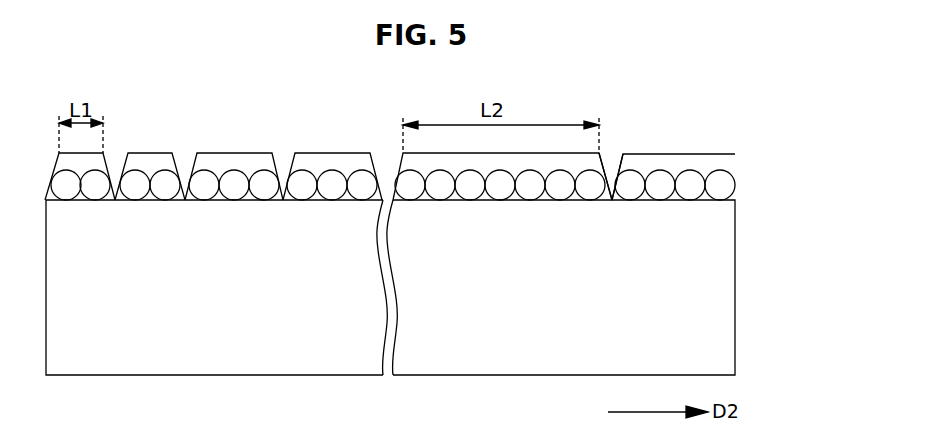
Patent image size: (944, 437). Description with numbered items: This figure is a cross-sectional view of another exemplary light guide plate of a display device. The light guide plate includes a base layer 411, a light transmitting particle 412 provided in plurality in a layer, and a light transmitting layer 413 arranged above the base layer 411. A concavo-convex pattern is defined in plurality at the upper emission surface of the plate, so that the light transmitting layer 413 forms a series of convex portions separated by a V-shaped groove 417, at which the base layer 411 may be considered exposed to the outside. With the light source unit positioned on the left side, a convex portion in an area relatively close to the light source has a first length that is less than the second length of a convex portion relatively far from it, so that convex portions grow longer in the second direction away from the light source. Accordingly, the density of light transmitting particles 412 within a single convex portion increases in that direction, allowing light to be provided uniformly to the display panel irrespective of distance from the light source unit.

The base layer 411 is at (720, 283).
The light transmitting particle 412 is at (720, 183).
The light transmitting layer 413 is at (703, 163).
The V-shaped groove 417 is at (611, 163).